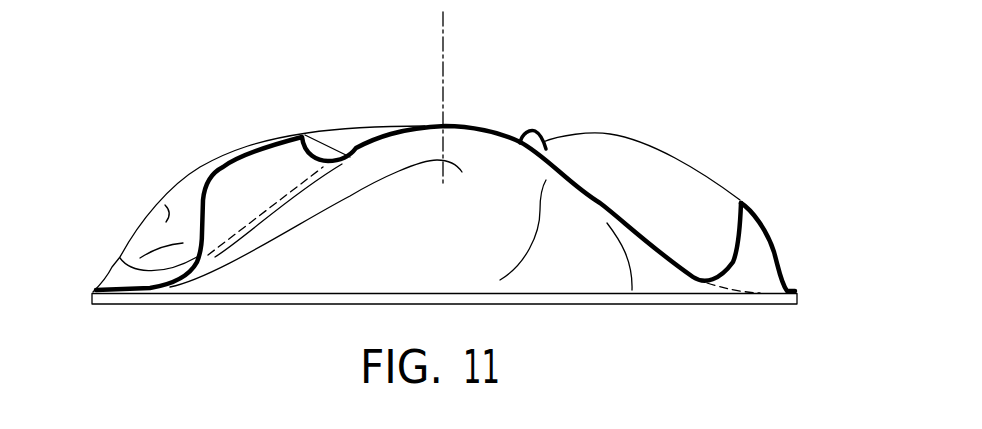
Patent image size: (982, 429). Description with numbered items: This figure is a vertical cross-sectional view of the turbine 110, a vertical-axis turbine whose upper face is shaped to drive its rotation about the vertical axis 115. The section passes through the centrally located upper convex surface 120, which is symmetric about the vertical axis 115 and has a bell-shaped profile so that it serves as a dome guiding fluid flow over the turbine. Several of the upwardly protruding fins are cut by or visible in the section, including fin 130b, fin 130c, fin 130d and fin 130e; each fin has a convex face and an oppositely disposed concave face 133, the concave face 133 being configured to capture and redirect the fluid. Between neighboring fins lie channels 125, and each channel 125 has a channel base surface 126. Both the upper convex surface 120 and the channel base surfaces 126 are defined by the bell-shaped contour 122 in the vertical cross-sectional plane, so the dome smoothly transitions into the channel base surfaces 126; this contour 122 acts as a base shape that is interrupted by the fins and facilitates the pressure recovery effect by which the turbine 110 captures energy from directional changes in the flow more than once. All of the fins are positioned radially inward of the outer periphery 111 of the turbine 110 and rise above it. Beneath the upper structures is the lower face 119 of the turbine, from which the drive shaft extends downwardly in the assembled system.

The turbine 110 is at (198, 86).
The outer periphery 111 is at (88, 293).
The vertical axis 115 is at (440, 41).
The lower face 119 is at (441, 143).
The upper convex surface 120 is at (473, 127).
The bell-shaped contour 122 is at (547, 184).
The channel 125 is at (658, 229).
The channel base surface 126 is at (603, 202).
The fin 130b is at (230, 168).
The fin 130c is at (193, 172).
The fin 130d is at (533, 131).
The fin 130e is at (727, 193).
The concave face 133 is at (169, 212).